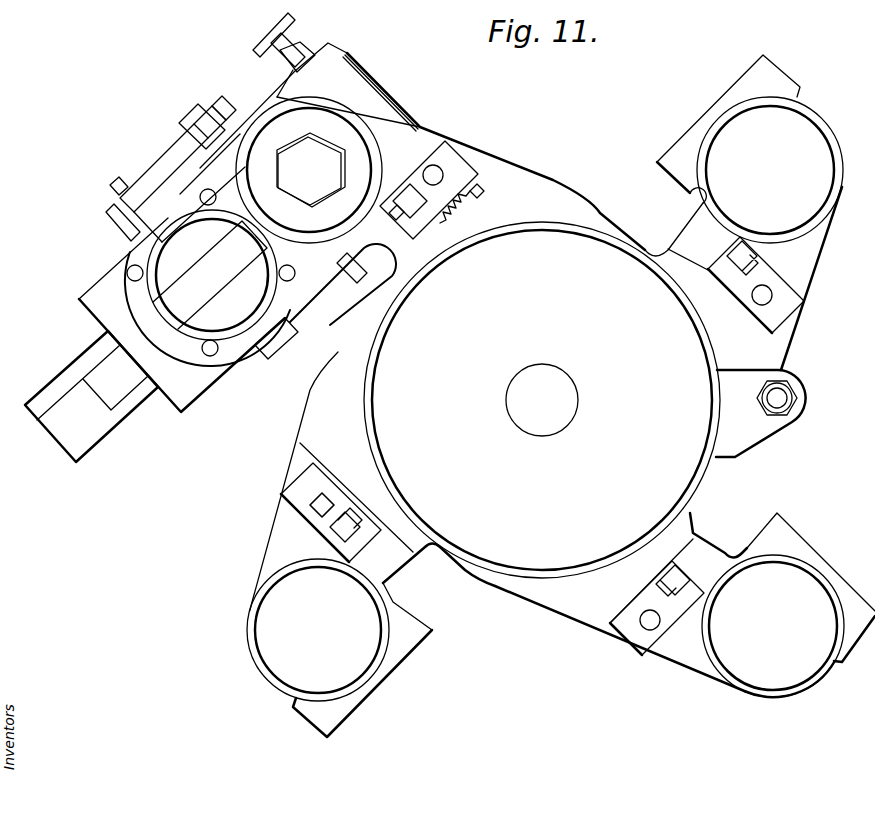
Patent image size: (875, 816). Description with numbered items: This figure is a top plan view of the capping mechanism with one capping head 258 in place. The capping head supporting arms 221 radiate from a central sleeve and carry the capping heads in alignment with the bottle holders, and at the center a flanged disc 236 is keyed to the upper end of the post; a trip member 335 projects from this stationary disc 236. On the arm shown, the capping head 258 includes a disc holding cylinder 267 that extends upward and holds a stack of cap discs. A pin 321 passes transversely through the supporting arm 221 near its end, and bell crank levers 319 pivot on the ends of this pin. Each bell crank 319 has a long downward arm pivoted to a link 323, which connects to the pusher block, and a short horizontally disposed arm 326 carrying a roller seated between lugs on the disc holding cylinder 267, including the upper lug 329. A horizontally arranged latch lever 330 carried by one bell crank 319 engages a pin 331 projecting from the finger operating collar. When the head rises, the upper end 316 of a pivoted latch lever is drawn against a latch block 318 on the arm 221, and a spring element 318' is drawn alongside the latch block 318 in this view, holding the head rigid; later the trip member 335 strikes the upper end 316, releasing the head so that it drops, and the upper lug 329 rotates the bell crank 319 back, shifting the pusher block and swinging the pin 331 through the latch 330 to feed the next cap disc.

The capping head supporting arm 221 is at (473, 150).
The flanged disc 236 is at (648, 474).
The trip member 335 is at (785, 397).
The capping head 258 is at (363, 165).
The latch block 318 is at (435, 170).
The upper end of latch lever 316 is at (415, 212).
The spring 318' is at (489, 203).
The pin 321 is at (118, 242).
The disc holding cylinder 267 is at (153, 238).
The upper lug 329 is at (167, 187).
The latch lever 330 is at (167, 157).
The horizontally disposed arm 326 is at (190, 140).
The bell crank lever 319 is at (222, 112).
The pin 331 is at (118, 188).
The link 323 is at (127, 217).